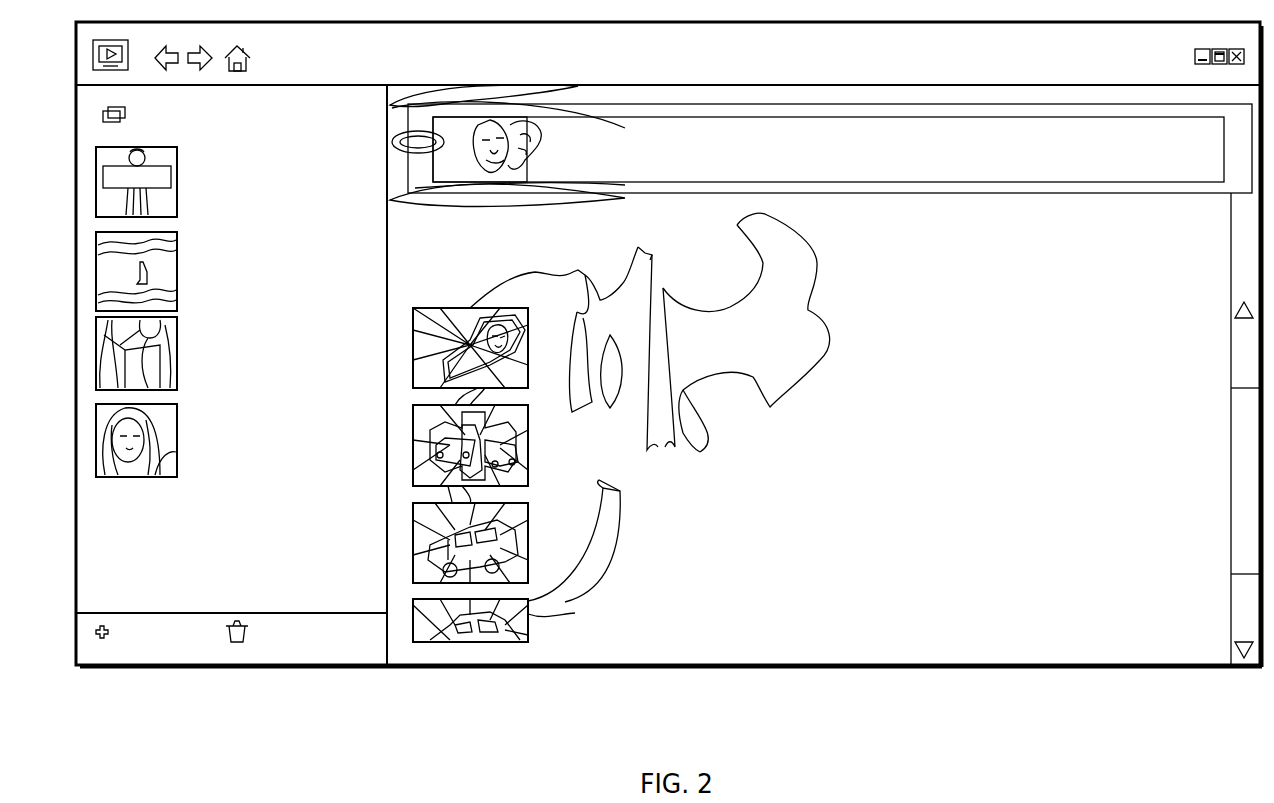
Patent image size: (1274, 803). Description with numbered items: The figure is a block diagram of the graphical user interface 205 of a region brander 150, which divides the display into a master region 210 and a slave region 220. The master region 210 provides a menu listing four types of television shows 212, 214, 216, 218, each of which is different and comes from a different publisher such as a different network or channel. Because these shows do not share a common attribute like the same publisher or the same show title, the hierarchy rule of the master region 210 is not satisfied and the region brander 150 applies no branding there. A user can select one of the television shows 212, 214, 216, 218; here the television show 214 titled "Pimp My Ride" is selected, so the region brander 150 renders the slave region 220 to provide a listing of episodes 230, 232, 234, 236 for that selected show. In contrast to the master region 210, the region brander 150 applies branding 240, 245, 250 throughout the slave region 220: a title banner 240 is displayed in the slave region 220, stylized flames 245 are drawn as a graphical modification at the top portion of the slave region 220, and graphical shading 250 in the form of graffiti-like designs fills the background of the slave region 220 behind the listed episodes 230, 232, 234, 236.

The region brander 150 is at (899, 66).
The graphical user interface 205 is at (715, 71).
The master region 210 is at (332, 127).
The television show 212 is at (294, 192).
The television show 214 is at (294, 280).
The television show 216 is at (294, 375).
The television show 218 is at (294, 469).
The slave region 220 is at (987, 241).
The episode 230 is at (719, 352).
The episode 232 is at (688, 467).
The episode 234 is at (758, 522).
The episode 236 is at (663, 641).
The title banner 240 is at (996, 133).
The stylized flames 245 is at (474, 90).
The graphical shading 250 is at (818, 281).